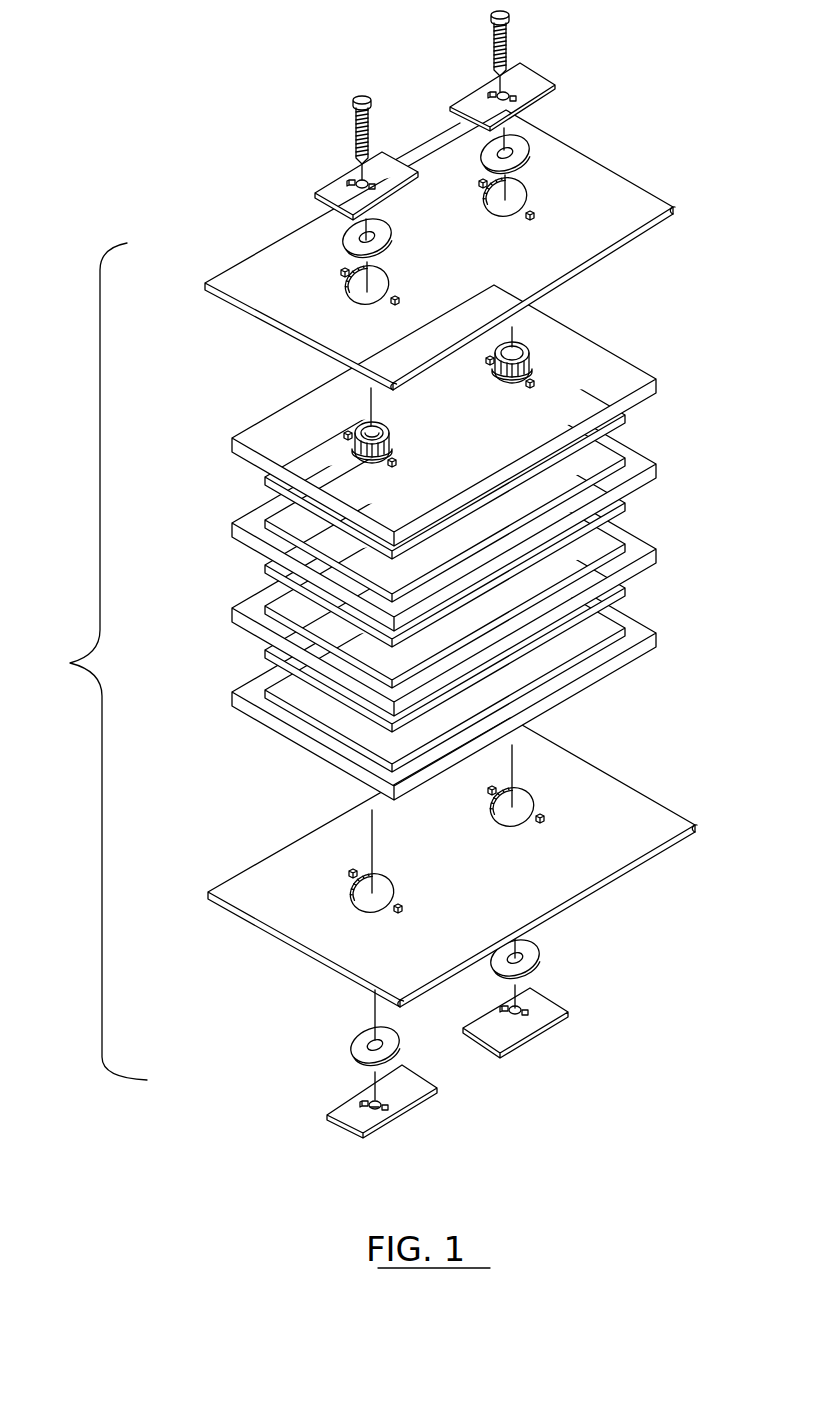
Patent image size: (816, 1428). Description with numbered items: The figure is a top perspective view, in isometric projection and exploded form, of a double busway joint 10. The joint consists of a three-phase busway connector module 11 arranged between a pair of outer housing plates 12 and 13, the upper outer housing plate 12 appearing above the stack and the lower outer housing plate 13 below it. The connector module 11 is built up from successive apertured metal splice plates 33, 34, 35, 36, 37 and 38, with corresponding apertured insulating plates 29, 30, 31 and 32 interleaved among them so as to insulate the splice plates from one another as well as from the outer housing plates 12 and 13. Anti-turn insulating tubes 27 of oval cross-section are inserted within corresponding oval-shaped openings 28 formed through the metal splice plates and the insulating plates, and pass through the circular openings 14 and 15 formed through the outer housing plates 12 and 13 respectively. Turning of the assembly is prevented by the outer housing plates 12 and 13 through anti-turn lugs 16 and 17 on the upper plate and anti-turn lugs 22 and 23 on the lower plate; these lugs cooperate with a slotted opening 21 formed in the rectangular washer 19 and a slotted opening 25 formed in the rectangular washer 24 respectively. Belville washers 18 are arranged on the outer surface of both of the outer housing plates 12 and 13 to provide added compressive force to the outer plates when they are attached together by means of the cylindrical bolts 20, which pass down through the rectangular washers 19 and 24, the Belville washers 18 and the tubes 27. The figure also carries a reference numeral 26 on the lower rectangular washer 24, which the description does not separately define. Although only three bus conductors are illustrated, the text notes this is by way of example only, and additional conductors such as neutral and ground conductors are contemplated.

The double busway joint 10 is at (48, 670).
The three-phase busway connector module 11 is at (757, 513).
The outer housing plate 12 is at (445, 250).
The outer housing plate 13 is at (461, 862).
The circular opening 14 is at (380, 278).
The circular opening 15 is at (386, 886).
The anti-turn lug 16 is at (338, 273).
The anti-turn lug 17 is at (401, 300).
The Belville washer 18 is at (386, 236).
The rectangular washer 19 is at (410, 158).
The cylindrical bolt 20 is at (372, 120).
The slotted opening 21 is at (386, 191).
The anti-turn lug 22 is at (345, 877).
The anti-turn lug 23 is at (408, 909).
The rectangular washer 24 is at (393, 1102).
The slotted opening 25 is at (390, 1110).
The lug 26 is at (385, 1111).
The anti-turn insulating tube 27 is at (384, 429).
The oval-shaped opening 28 is at (395, 428).
The apertured insulating plate 29 is at (230, 445).
The apertured insulating plate 30 is at (230, 535).
The apertured insulating plate 31 is at (230, 618).
The apertured insulating plate 32 is at (230, 701).
The apertured metal splice plate 33 is at (265, 483).
The apertured metal splice plate 34 is at (265, 524).
The apertured metal splice plate 35 is at (265, 571).
The apertured metal splice plate 36 is at (265, 609).
The apertured metal splice plate 37 is at (265, 656).
The apertured metal splice plate 38 is at (265, 693).